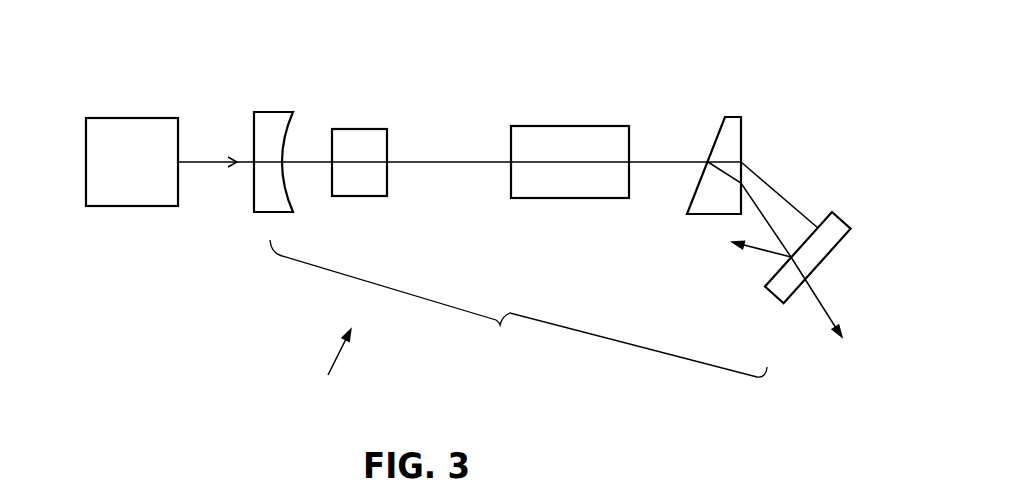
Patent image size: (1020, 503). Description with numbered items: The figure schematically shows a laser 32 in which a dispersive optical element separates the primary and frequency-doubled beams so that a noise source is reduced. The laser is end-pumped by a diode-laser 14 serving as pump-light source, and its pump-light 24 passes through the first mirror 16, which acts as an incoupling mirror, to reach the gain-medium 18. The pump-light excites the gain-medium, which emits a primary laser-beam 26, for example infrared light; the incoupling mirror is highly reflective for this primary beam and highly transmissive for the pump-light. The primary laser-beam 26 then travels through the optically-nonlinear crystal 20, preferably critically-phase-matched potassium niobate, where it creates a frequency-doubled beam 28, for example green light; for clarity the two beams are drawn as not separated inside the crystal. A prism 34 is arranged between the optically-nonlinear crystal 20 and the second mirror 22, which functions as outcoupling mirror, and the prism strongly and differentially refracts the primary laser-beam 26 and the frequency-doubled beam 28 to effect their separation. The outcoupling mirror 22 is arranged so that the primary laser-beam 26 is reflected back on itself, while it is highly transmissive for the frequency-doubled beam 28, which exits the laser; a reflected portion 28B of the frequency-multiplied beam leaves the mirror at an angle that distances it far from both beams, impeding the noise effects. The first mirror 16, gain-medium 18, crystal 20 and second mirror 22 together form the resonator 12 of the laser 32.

The resonator 12 is at (530, 320).
The diode-laser 14 is at (131, 118).
The first mirror 16 is at (268, 110).
The gain-medium 18 is at (362, 128).
The optically-nonlinear crystal 20 is at (599, 126).
The second mirror 22 is at (837, 215).
The pump-light 24 is at (195, 162).
The primary laser-beam 26 is at (437, 161).
The frequency-doubled beam 28 is at (820, 298).
The reflected beam 28B is at (757, 250).
The laser 32 is at (321, 360).
The prism 34 is at (732, 118).